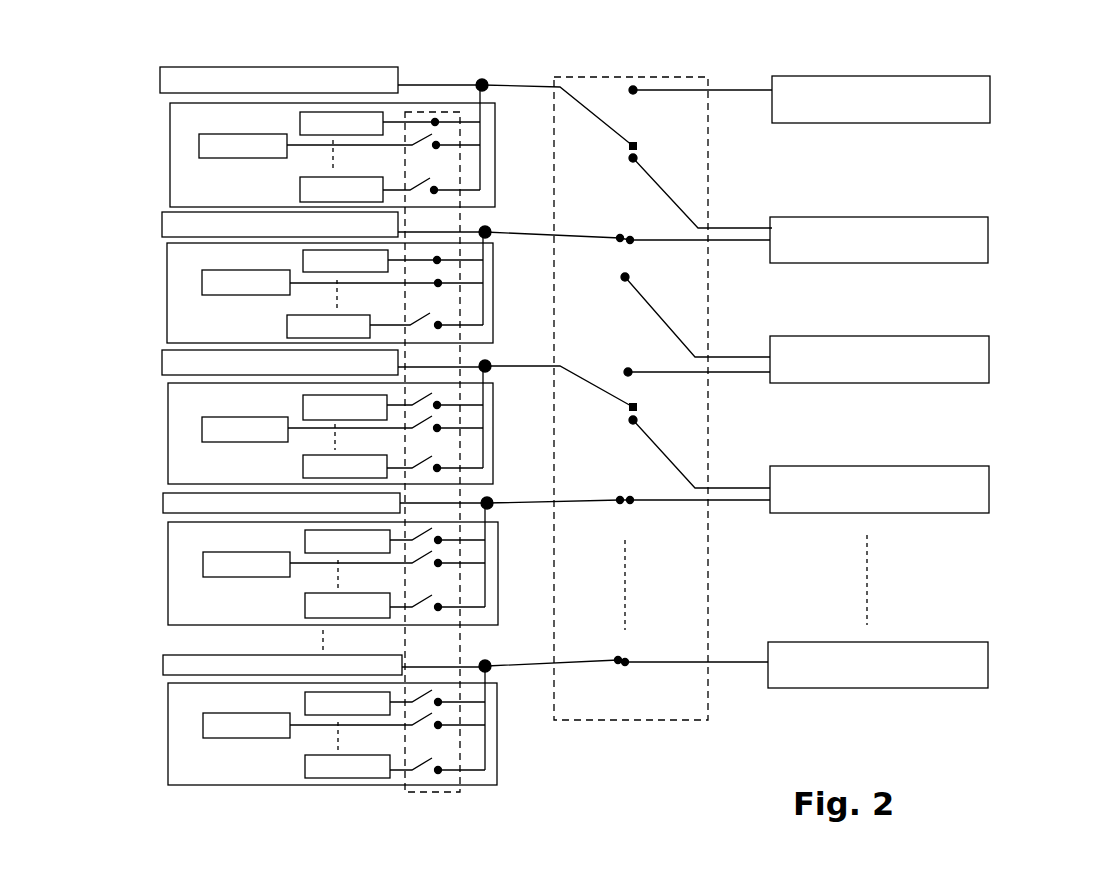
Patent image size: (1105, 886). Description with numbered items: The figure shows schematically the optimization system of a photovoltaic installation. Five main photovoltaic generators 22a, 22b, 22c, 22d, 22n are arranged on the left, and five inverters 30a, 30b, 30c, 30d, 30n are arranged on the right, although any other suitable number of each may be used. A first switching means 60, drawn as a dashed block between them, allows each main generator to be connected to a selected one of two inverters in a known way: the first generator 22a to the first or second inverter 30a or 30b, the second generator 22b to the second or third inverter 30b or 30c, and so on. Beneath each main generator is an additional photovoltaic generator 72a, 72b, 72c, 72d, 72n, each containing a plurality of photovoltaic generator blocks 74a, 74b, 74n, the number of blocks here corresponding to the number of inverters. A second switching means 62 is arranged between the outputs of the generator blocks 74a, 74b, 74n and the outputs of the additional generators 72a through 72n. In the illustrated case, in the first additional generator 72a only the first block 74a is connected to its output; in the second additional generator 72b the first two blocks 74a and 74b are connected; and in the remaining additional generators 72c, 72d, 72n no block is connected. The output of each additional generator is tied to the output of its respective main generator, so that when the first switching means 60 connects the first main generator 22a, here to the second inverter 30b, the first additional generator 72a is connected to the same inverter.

The first main photovoltaic generator 22a is at (160, 76).
The second main photovoltaic generator 22b is at (162, 222).
The third main photovoltaic generator 22c is at (162, 362).
The fourth main photovoltaic generator 22d is at (163, 500).
The nth main photovoltaic generator 22n is at (163, 664).
The first additional photovoltaic generator 72a is at (170, 156).
The second additional photovoltaic generator 72b is at (167, 292).
The third additional photovoltaic generator 72c is at (168, 440).
The fourth additional photovoltaic generator 72d is at (168, 584).
The nth additional photovoltaic generator 72n is at (168, 732).
The first photovoltaic generator block 74a is at (300, 123).
The second photovoltaic generator block 74b is at (206, 158).
The nth photovoltaic generator block 74n is at (300, 190).
The first switching means 60 is at (617, 75).
The second switching means 62 is at (442, 792).
The first inverter 30a is at (990, 95).
The second inverter 30b is at (988, 238).
The third inverter 30c is at (989, 358).
The fourth inverter 30d is at (989, 490).
The nth inverter 30n is at (988, 666).